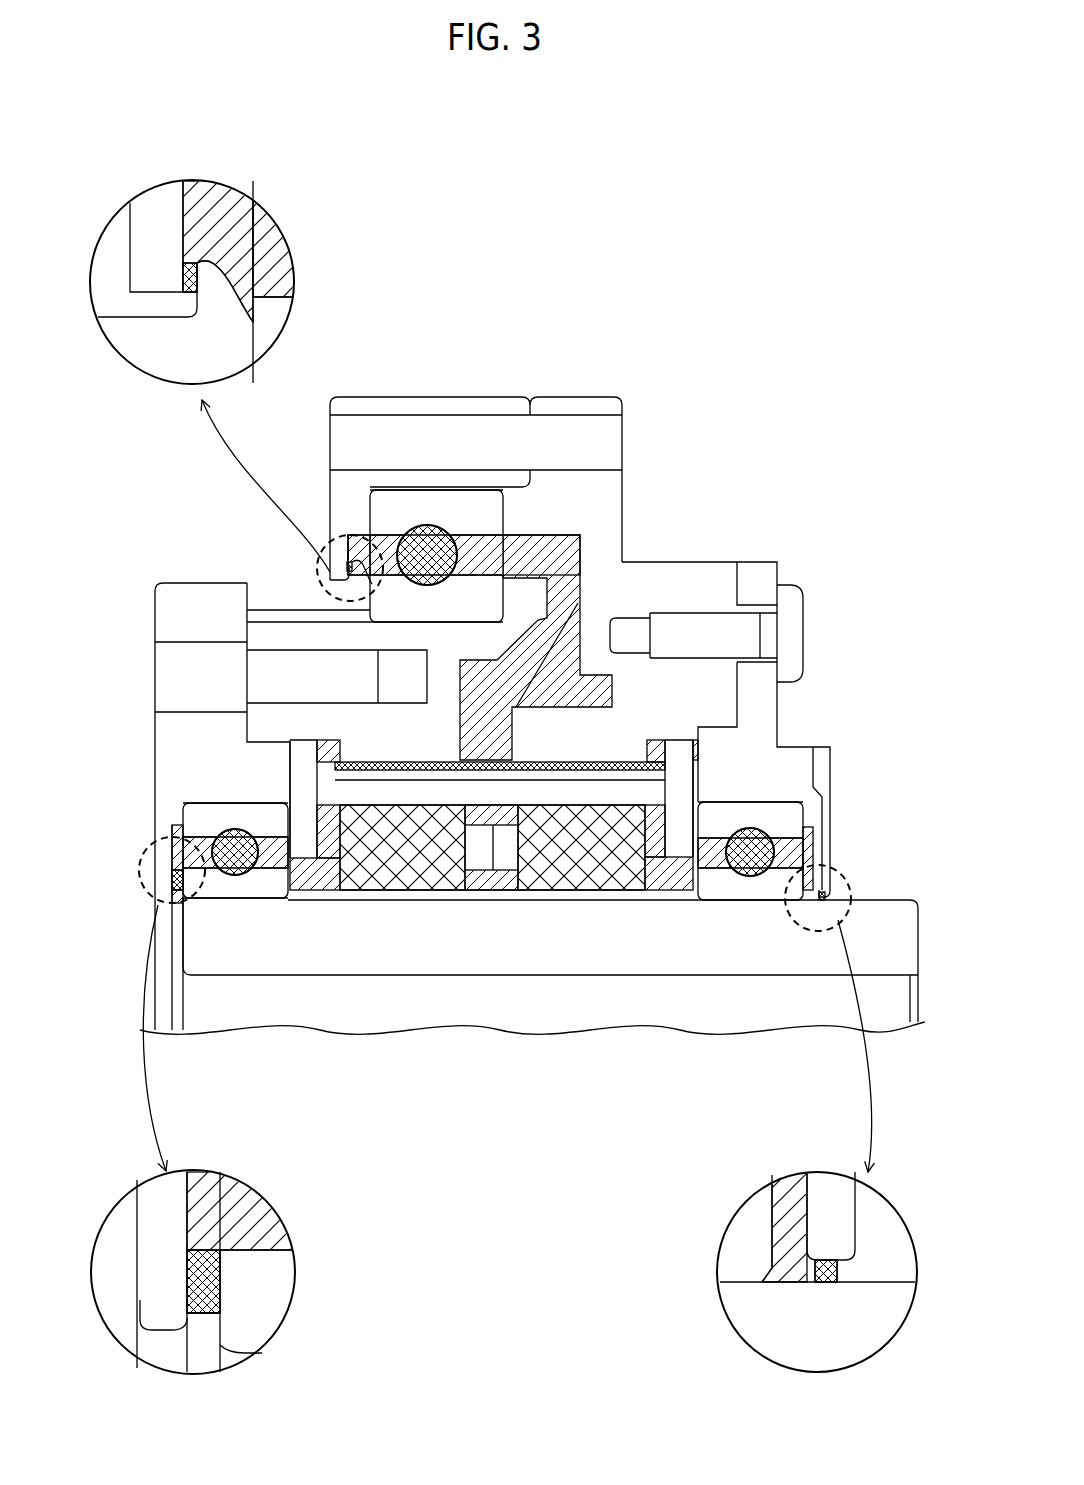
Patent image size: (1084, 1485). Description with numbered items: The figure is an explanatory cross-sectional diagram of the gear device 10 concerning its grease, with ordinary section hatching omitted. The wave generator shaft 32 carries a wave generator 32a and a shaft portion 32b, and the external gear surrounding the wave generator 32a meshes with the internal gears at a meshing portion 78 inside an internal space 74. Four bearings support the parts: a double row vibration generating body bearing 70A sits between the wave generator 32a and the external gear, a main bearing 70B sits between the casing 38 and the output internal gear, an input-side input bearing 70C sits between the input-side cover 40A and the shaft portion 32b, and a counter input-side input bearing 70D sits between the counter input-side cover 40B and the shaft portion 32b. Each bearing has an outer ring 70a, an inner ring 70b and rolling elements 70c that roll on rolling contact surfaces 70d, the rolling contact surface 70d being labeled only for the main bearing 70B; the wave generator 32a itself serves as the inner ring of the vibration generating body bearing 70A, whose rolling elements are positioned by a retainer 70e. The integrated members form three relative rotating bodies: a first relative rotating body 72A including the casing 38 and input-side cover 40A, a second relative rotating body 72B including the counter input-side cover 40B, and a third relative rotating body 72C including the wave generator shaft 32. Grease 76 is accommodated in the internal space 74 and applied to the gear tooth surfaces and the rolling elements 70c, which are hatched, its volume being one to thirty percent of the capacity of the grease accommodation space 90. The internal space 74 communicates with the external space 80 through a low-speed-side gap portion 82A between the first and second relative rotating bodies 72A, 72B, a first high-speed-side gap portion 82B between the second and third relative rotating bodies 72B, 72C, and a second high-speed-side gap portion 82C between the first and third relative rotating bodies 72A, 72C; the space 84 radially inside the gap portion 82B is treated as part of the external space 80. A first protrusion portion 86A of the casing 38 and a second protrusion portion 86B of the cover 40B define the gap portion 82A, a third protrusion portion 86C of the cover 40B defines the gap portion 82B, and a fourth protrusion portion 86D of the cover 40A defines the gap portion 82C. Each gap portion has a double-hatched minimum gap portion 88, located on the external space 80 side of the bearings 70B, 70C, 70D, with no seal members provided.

The gear device 10 is at (738, 348).
The wave generator shaft 32 is at (780, 1305).
The wave generator 32a is at (500, 892).
The shaft portion 32b is at (292, 893).
The casing 38 is at (378, 390).
The input-side cover 40A is at (770, 712).
The counter input-side cover 40B is at (168, 772).
The vibration generating body bearing 70A is at (627, 912).
The main bearing 70B is at (445, 470).
The input-side input bearing 70C is at (755, 905).
The counter input-side input bearing 70D is at (230, 905).
The outer ring 70a is at (487, 515).
The inner ring 70b is at (428, 602).
The rolling elements 70c is at (447, 577).
The rolling contact surface 70d is at (400, 553).
The retainer 70e is at (330, 845).
The first relative rotating body 72A is at (572, 393).
The second relative rotating body 72B is at (150, 805).
The third relative rotating body 72C is at (838, 805).
The internal space 74 is at (592, 585).
The grease 76 is at (434, 537).
The meshing portion 78 is at (420, 752).
The external space 80 is at (905, 513).
The low-speed-side gap portion 82A is at (226, 180).
The first high-speed-side gap portion 82B is at (302, 877).
The second high-speed-side gap portion 82C is at (685, 878).
The space 84 is at (172, 1042).
The first protrusion portion 86A is at (160, 210).
The second protrusion portion 86B is at (220, 300).
The third protrusion portion 86C is at (160, 1200).
The fourth protrusion portion 86D is at (825, 1220).
The minimum gap portion 88 is at (180, 268).
The grease accommodation space 90 is at (378, 667).